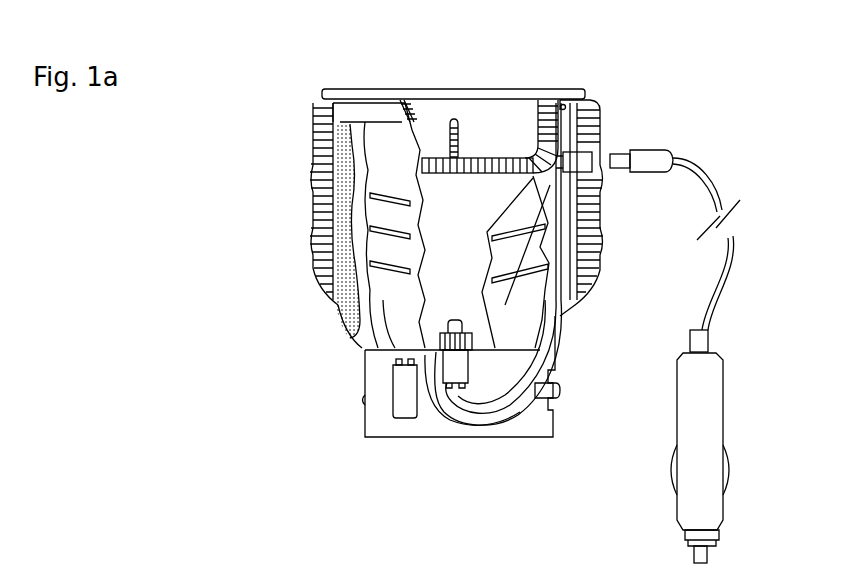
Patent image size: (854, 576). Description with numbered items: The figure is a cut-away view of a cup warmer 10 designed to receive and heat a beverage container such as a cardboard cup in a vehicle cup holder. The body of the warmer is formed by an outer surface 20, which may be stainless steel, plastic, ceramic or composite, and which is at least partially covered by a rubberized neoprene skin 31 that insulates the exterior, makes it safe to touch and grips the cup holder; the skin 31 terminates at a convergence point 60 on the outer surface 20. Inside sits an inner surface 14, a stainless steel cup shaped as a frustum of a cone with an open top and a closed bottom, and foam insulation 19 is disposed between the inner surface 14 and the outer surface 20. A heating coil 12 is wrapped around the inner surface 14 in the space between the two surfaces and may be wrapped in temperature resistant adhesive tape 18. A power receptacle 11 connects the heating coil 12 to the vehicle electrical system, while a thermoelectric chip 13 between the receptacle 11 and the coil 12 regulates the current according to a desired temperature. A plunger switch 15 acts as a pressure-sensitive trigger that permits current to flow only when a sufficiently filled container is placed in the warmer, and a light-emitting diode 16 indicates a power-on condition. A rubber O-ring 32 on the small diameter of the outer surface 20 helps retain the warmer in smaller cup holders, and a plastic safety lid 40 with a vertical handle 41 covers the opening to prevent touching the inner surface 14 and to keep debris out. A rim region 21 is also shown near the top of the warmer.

The cup warmer 10 is at (610, 197).
The power receptacle 11 is at (585, 158).
The heating coil 12 is at (392, 272).
The thermoelectric chip 13 is at (405, 381).
The inner surface 14 is at (392, 243).
The plunger switch 15 is at (455, 373).
The light-emitting diode 16 is at (597, 106).
The temperature resistant adhesive tape 18 is at (337, 180).
The foam insulation 19 is at (392, 214).
The outer surface 20 is at (560, 343).
The cup rim 21 is at (338, 109).
The neoprene skin 31 is at (313, 145).
The rubber O-ring 32 is at (562, 390).
The plastic safety lid 40 is at (588, 93).
The vertical handle 41 is at (454, 112).
The convergence point 60 is at (338, 305).